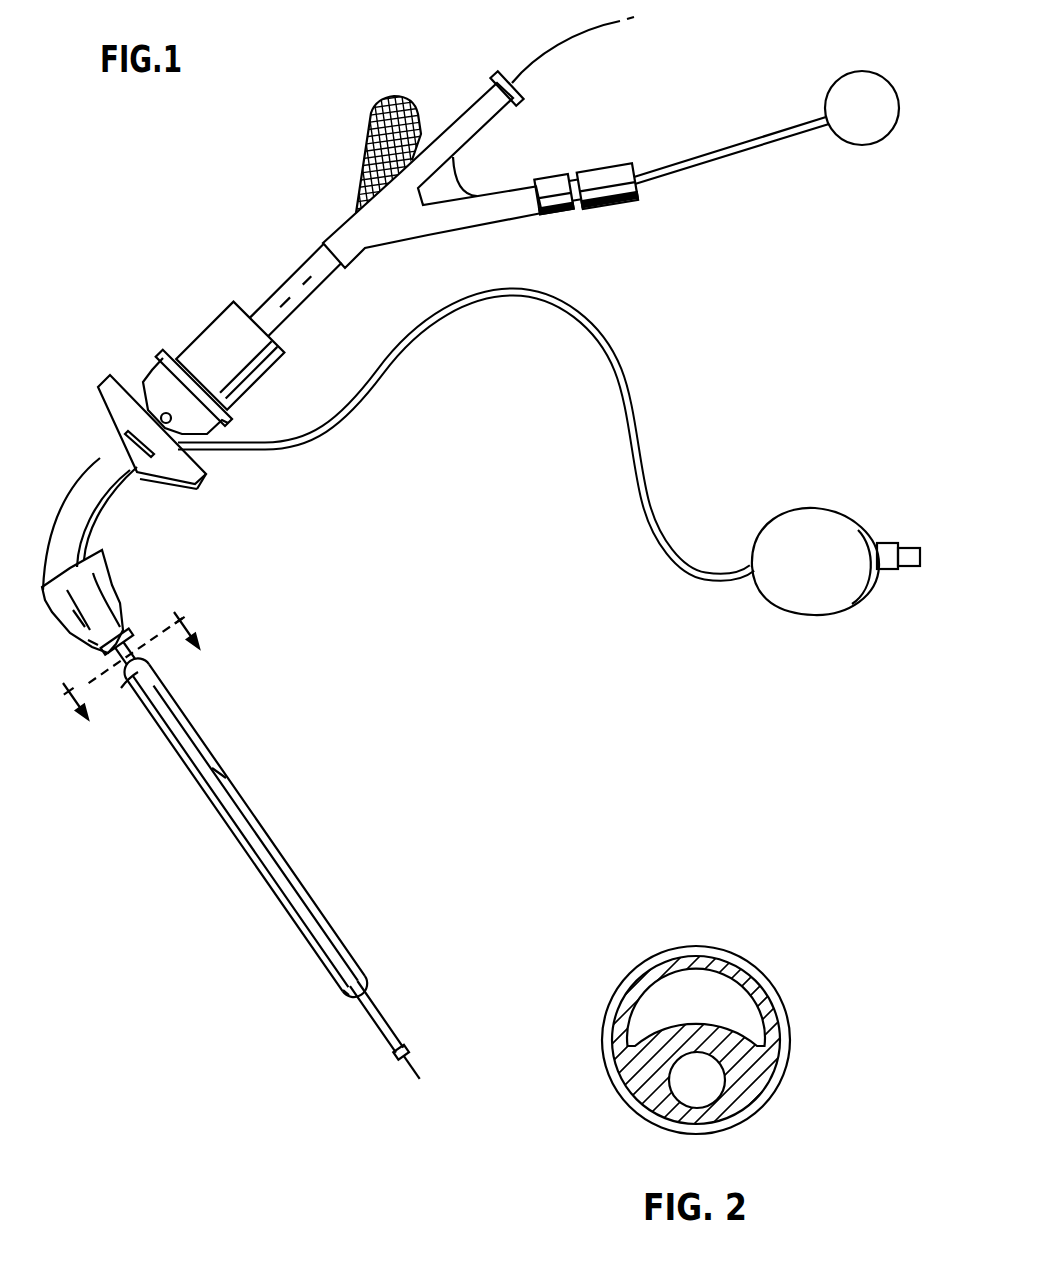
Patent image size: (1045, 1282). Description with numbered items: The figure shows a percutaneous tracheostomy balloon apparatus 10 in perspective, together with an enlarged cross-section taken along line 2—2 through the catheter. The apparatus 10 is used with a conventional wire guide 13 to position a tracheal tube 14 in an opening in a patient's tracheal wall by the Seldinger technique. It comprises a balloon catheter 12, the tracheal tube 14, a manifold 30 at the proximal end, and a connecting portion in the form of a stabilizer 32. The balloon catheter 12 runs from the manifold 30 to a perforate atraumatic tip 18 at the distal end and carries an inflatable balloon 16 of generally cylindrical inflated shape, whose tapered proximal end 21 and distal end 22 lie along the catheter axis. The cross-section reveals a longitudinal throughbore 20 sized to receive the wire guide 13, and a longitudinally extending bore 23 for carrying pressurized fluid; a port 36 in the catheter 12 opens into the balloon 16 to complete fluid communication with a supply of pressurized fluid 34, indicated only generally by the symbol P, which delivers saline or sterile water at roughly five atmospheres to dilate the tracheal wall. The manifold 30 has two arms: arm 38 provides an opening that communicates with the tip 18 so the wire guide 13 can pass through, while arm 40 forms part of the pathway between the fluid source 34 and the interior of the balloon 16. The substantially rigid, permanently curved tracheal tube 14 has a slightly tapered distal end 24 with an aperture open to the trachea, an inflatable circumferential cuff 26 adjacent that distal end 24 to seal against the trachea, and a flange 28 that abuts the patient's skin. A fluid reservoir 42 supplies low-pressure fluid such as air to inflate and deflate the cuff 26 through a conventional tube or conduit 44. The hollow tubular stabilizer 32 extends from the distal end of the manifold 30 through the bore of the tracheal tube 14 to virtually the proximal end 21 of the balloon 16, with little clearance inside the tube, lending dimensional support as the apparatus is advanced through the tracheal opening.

In FIG. 1, the line 2— 2 is at (140, 685).
In FIG. 1, the percutaneous tracheostomy balloon apparatus 10 is at (165, 269).
In FIG. 1, the balloon catheter 12 is at (157, 623).
In FIG. 2, the balloon catheter 12 is at (612, 995).
In FIG. 1, the wire guide 13 is at (541, 63).
In FIG. 1, the tracheal tube 14 is at (62, 503).
In FIG. 1, the inflatable balloon 16 is at (212, 800).
In FIG. 1, the perforate atraumatic tip 18 is at (398, 1045).
In FIG. 2, the longitudinal throughbore 20 is at (690, 1098).
In FIG. 1, the proximal end of balloon 21 is at (120, 687).
In FIG. 1, the distal end of balloon 22 is at (348, 988).
In FIG. 2, the longitudinally extending bore 23 is at (745, 992).
In FIG. 1, the distal end of tracheal tube 24 is at (133, 633).
In FIG. 1, the inflatable circumferential cuff 26 is at (107, 577).
In FIG. 1, the flange 28 is at (208, 481).
In FIG. 1, the manifold 30 is at (325, 172).
In FIG. 1, the connecting portion (stabilizer) 32 is at (278, 290).
In FIG. 1, the supply of pressurized fluid 34 is at (847, 140).
In FIG. 1, the port 36 is at (217, 770).
In FIG. 1, the arm 38 is at (452, 122).
In FIG. 1, the arm 40 is at (522, 212).
In FIG. 1, the fluid reservoir 42 is at (803, 515).
In FIG. 1, the tube or conduit 44 is at (618, 357).